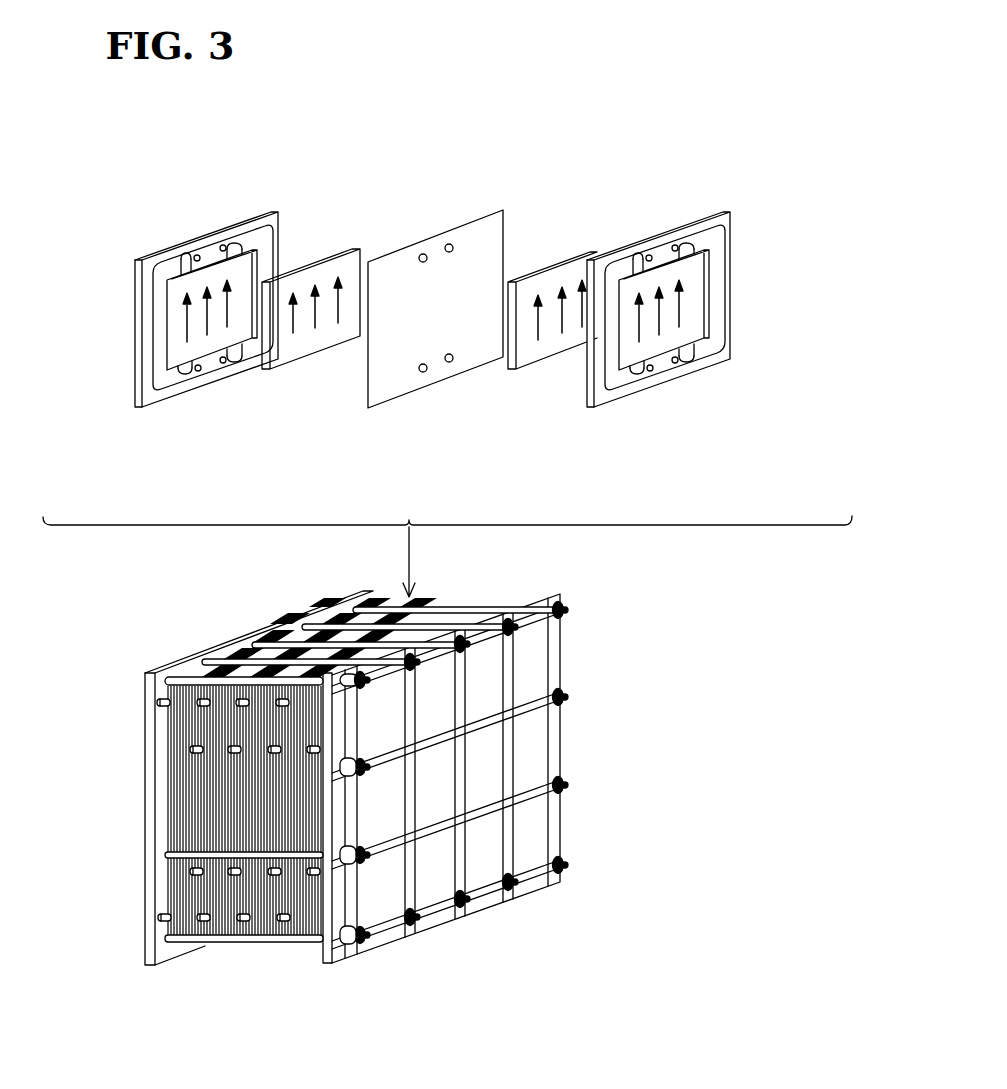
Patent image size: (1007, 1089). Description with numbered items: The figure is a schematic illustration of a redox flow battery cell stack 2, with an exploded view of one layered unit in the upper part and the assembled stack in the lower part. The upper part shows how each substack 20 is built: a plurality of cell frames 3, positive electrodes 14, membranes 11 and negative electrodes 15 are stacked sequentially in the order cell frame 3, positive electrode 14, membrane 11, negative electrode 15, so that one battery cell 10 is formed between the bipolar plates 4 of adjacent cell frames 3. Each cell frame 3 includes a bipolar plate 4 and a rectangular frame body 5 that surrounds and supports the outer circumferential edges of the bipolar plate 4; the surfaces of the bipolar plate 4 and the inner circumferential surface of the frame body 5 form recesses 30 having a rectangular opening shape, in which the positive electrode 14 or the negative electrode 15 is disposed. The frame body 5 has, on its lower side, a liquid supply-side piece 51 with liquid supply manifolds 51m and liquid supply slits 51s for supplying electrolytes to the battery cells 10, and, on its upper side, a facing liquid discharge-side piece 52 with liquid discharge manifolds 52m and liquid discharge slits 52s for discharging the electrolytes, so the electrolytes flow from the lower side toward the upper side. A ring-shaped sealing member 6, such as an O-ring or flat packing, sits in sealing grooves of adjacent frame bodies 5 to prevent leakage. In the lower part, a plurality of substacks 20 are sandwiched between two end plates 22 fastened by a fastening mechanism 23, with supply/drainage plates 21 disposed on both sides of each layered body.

The cell stack 2 is at (590, 752).
The cell frame 3 is at (134, 326).
The bipolar plate 4 is at (693, 263).
The frame body 5 is at (718, 300).
The sealing member 6 is at (273, 240).
The battery cell 10 is at (377, 178).
The membrane 11 is at (462, 227).
The positive electrode 14 is at (302, 343).
The negative electrode 15 is at (542, 353).
The substack 20 is at (167, 943).
The supply/drainage plate 21 is at (168, 900).
The end plate 22 is at (143, 694).
The fastening mechanism 23 is at (197, 642).
The recess 30 is at (247, 270).
The liquid supply-side piece 51 is at (183, 383).
The liquid supply manifold 51m is at (220, 364).
The liquid supply slit 51s is at (170, 378).
The liquid discharge-side piece 52 is at (242, 240).
The liquid discharge manifold 52m is at (235, 247).
The liquid discharge slit 52s is at (180, 263).